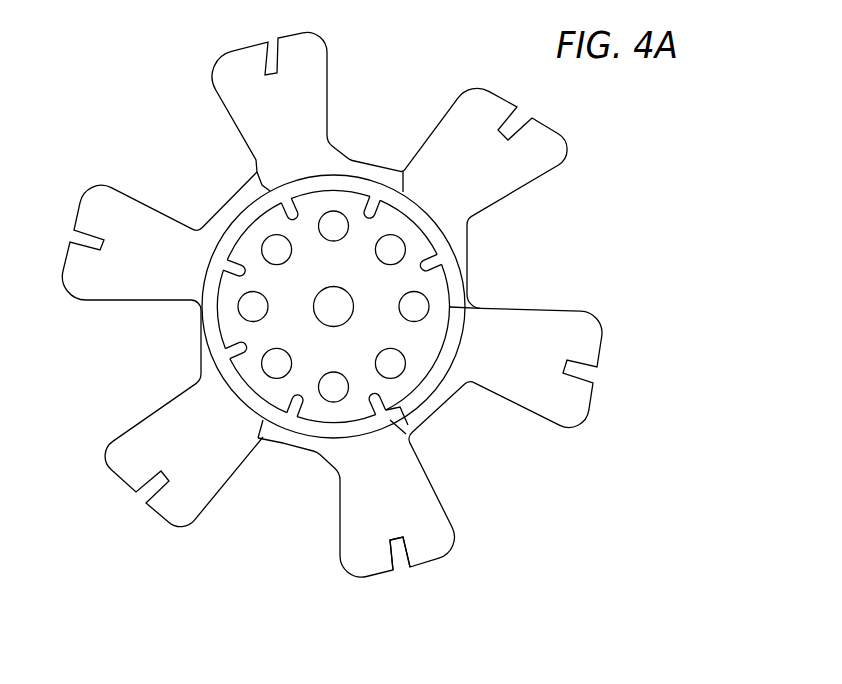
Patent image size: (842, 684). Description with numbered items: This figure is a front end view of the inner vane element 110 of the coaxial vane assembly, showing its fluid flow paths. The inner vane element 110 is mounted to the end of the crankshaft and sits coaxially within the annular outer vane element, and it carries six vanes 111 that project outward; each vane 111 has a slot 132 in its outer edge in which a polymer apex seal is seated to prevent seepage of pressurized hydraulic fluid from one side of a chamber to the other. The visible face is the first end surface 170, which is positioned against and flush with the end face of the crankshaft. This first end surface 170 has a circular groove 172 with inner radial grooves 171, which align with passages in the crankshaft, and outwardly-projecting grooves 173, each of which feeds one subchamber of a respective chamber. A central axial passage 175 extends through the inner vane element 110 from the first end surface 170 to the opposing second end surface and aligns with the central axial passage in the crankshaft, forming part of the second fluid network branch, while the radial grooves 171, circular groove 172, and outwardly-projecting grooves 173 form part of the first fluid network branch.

The inner vane element 110 is at (540, 220).
The vane 111 is at (350, 563).
The slot 132 is at (402, 562).
The first end surface 170 is at (478, 333).
The inner radial grooves 171 is at (234, 345).
The circular groove 172 is at (214, 329).
The outwardly-projecting grooves 173 is at (196, 309).
The central axial passage 175 is at (327, 311).